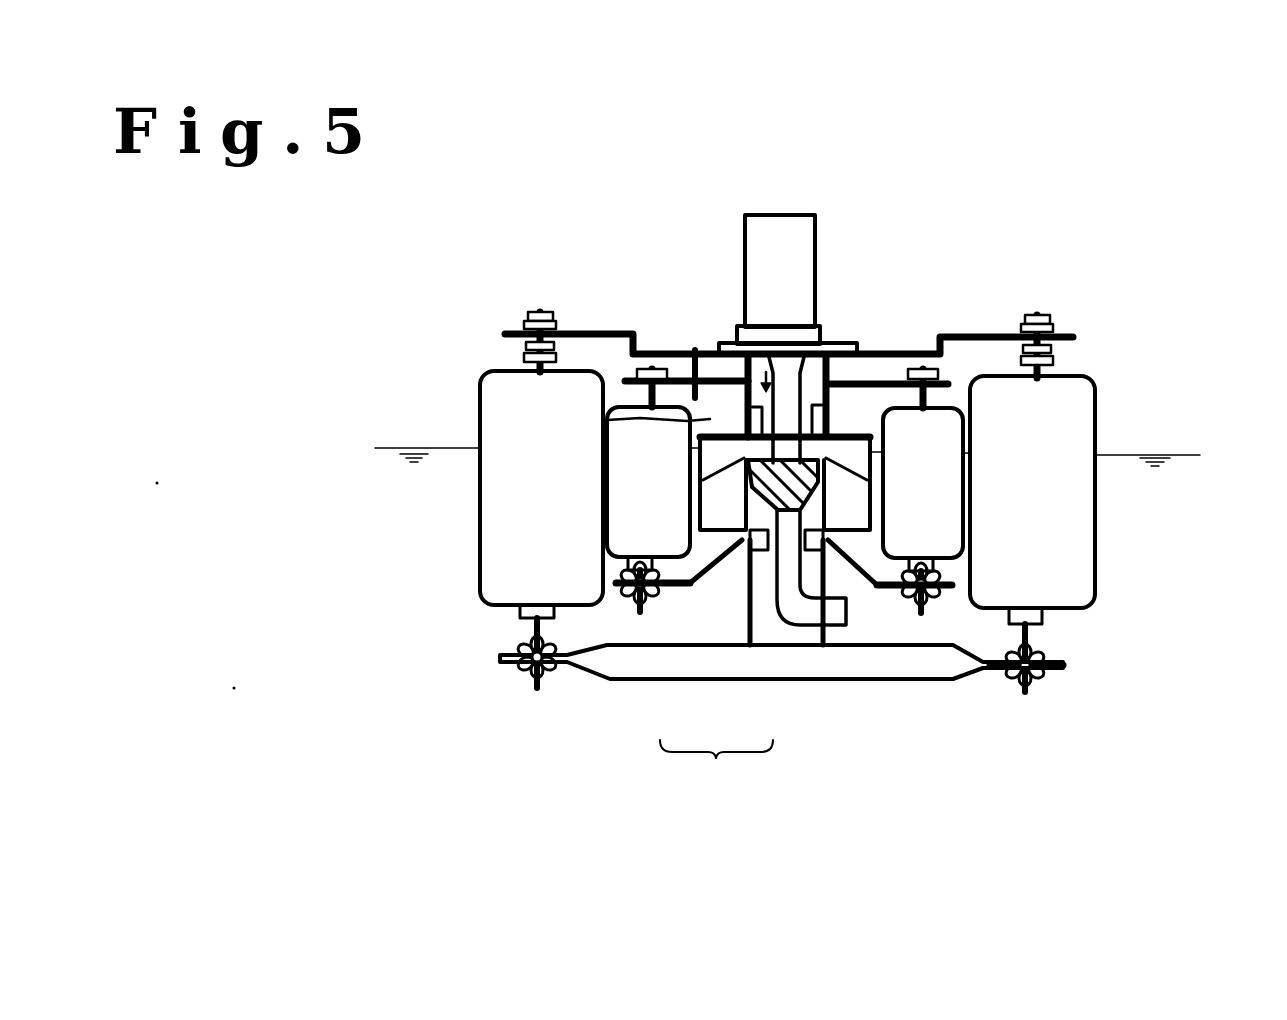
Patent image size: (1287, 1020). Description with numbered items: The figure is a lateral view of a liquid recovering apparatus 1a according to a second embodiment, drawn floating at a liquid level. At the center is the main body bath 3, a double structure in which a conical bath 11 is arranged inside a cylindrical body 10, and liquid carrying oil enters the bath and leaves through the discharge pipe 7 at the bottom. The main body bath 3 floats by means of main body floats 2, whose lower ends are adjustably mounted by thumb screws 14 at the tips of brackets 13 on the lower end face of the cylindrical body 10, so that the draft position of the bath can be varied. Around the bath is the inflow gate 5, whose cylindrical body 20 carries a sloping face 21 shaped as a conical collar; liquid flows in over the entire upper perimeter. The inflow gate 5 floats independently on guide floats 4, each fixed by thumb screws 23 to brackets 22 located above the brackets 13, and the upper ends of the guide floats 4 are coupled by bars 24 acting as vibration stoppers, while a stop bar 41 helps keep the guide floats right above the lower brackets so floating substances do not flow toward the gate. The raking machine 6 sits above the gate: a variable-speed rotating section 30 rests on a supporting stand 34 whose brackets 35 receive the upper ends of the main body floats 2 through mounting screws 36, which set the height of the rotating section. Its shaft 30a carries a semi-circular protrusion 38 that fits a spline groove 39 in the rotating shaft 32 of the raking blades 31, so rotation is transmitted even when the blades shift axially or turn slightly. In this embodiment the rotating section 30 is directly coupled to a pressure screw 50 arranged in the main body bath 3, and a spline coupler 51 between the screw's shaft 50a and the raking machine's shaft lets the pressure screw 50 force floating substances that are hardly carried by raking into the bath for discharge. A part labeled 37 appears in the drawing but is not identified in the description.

The liquid recovering apparatus 1a is at (970, 195).
The main body float 2 is at (1097, 375).
The main body bath 3 is at (716, 764).
The guide float 4 is at (947, 543).
The inflow gate 5 is at (690, 524).
The raking machine 6 is at (600, 418).
The discharge pipe 7 is at (840, 613).
The cylindrical body 10 is at (668, 645).
The conical bath 11 is at (753, 605).
The brackets 13 is at (967, 668).
The thumb screws 14 is at (527, 647).
The cylindrical body 20 is at (688, 488).
The sloping face 21 is at (700, 468).
The brackets 22 is at (682, 590).
The thumb screws 23 is at (628, 588).
The bars 24 is at (912, 358).
The rotating section 30 is at (798, 227).
The shaft 30a is at (778, 347).
The raking blades 31 is at (722, 428).
The rotating shaft 32 is at (818, 395).
The supporting stand 34 is at (825, 347).
The brackets 35 is at (1000, 336).
The mounting screws 36 is at (1048, 335).
The collar 37 is at (770, 350).
The semi-circular protrusion 38 is at (832, 405).
The spline groove 39 is at (872, 418).
The stop bar 41 is at (675, 352).
The pressure screw 50 is at (786, 603).
The shaft 50a is at (872, 445).
The coupler 51 is at (707, 352).